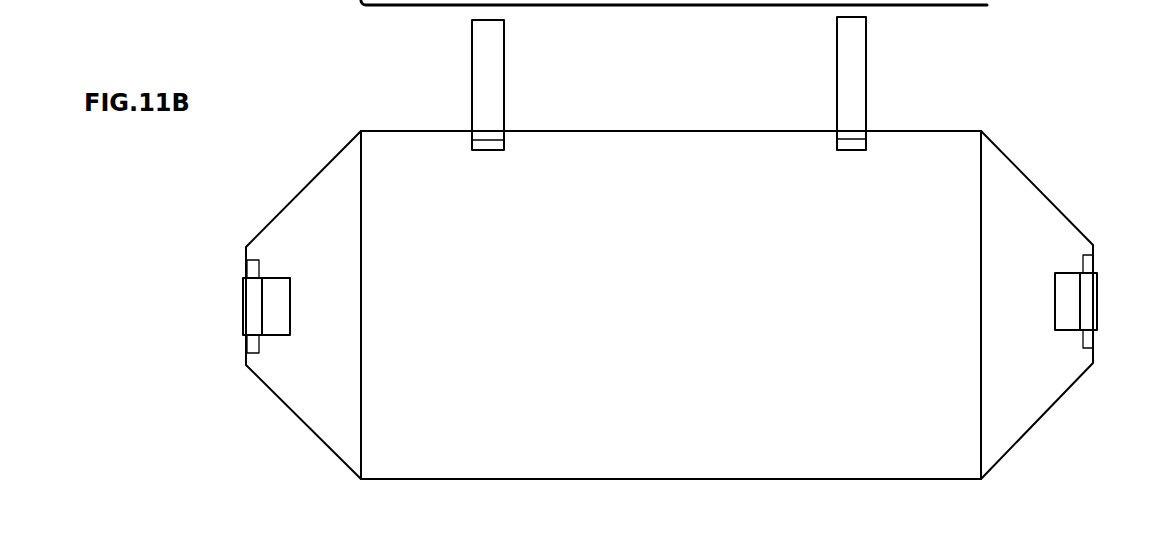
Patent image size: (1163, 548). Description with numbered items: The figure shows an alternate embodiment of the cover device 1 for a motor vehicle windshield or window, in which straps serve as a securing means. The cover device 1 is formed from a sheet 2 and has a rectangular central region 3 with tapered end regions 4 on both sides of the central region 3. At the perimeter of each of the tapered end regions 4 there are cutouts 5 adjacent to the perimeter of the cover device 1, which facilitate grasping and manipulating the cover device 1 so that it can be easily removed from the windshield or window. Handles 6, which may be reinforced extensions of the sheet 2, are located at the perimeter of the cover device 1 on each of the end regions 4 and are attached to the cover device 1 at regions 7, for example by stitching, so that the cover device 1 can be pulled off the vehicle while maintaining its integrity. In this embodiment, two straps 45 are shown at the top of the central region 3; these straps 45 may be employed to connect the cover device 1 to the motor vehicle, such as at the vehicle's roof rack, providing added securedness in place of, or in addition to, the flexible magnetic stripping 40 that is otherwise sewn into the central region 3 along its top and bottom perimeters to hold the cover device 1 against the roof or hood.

The cover device 1 is at (297, 0).
The sheet 2 is at (580, 131).
The central region 3 is at (871, 152).
The tapered end regions 4 is at (326, 188).
The cutouts 5 is at (270, 295).
The handles 6 is at (250, 318).
The regions 7 is at (251, 268).
The flexible magnetic stripping 40 is at (871, 0).
The straps 45 is at (837, 37).